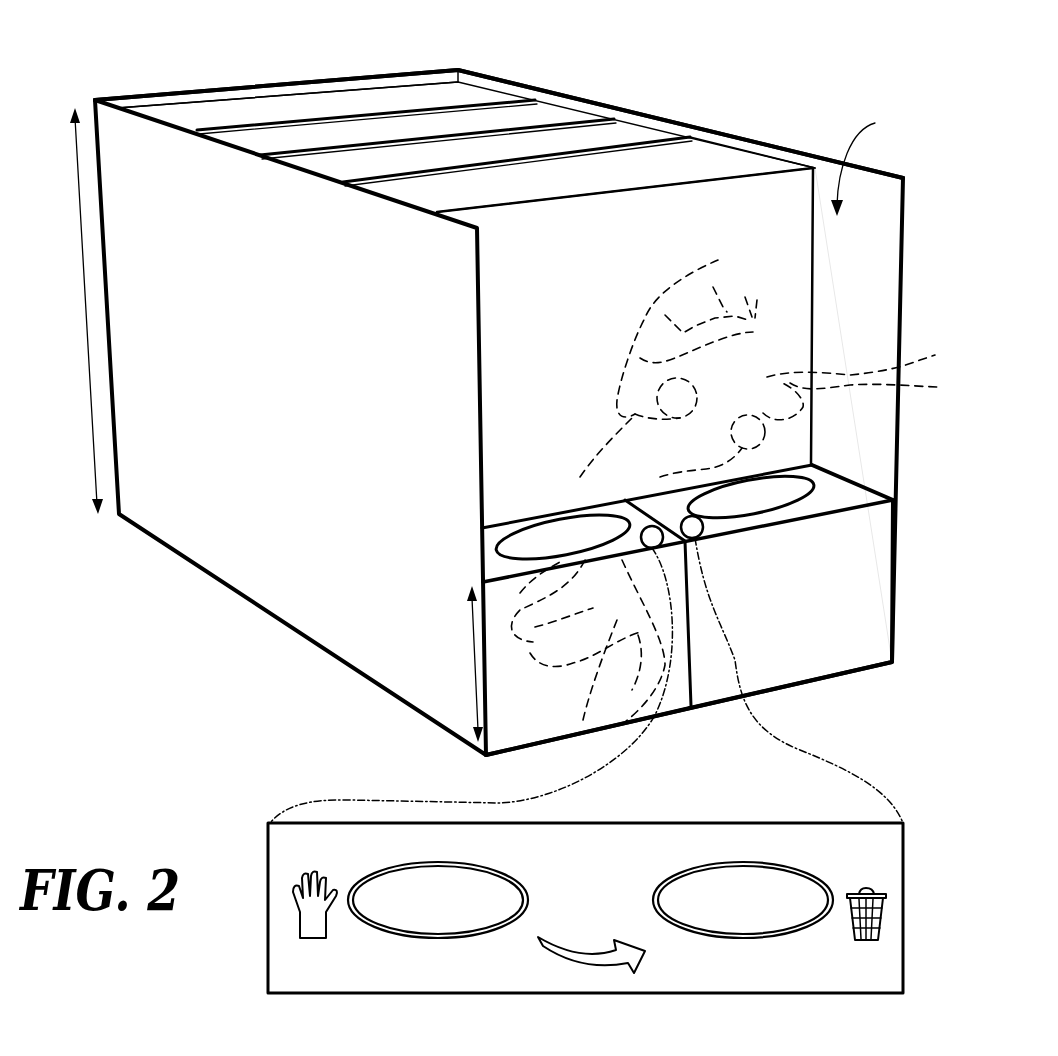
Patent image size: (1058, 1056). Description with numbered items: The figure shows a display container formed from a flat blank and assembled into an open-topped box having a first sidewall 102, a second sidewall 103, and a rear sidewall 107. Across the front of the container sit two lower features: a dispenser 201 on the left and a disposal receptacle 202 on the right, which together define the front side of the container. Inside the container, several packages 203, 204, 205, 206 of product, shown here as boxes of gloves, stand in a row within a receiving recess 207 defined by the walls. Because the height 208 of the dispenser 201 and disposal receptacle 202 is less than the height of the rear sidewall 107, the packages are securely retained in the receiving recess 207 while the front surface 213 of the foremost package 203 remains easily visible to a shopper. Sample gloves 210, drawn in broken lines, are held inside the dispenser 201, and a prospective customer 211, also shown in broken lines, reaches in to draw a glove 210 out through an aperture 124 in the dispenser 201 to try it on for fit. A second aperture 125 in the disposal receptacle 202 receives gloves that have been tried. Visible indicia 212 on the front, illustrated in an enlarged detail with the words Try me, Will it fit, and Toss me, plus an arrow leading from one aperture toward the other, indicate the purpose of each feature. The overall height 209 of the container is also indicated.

The first sidewall 102 is at (272, 508).
The second sidewall 103 is at (763, 143).
The rear sidewall 107 is at (272, 82).
The aperture 124 is at (502, 522).
The aperture 125 is at (808, 463).
The dispenser 201 is at (500, 725).
The disposal receptacle 202 is at (805, 633).
The package 203 is at (675, 165).
The package 204 is at (593, 142).
The package 205 is at (533, 118).
The package 206 is at (445, 97).
The receiving recess 207 is at (871, 165).
The height 208 is at (473, 643).
The container height 209 is at (88, 360).
The sample glove 210 is at (527, 655).
The prospective customer 211 is at (648, 308).
The visible indicia 212 is at (700, 531).
The front surface 213 is at (536, 331).